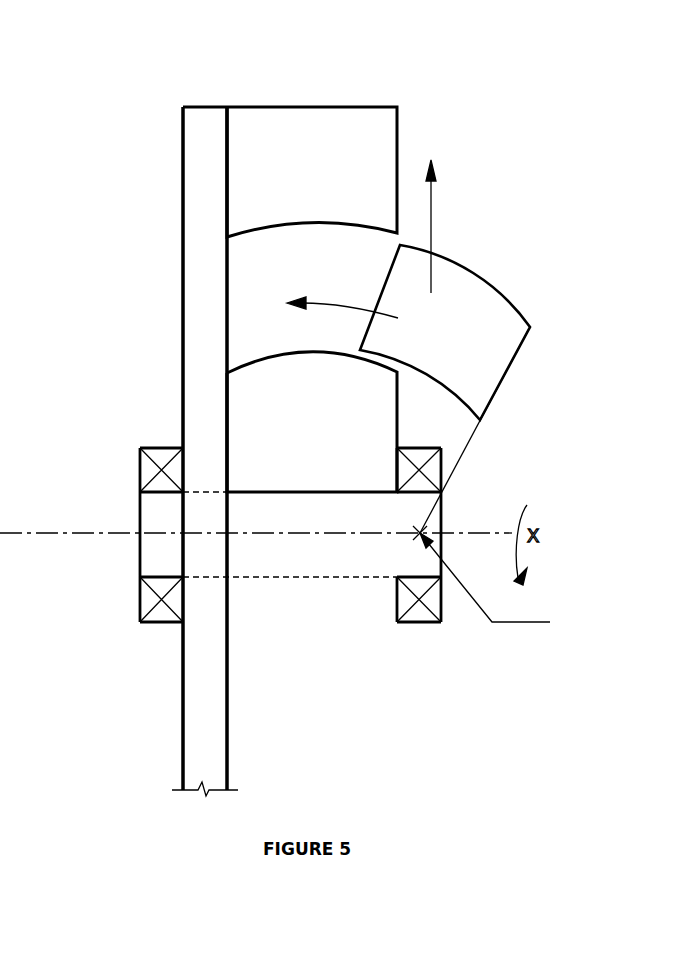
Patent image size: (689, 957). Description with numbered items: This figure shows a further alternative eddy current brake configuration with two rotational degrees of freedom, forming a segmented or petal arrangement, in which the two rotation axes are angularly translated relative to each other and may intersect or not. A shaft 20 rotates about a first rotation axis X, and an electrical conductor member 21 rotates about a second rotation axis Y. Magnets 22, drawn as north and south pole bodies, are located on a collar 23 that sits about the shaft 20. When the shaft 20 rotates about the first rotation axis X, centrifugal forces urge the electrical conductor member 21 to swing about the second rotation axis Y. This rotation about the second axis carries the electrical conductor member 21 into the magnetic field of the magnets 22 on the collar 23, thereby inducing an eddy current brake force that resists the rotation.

The shaft 20 is at (149, 563).
The electrical conductor member 21 is at (504, 327).
The magnets 22 is at (268, 122).
The collar 23 is at (190, 301).